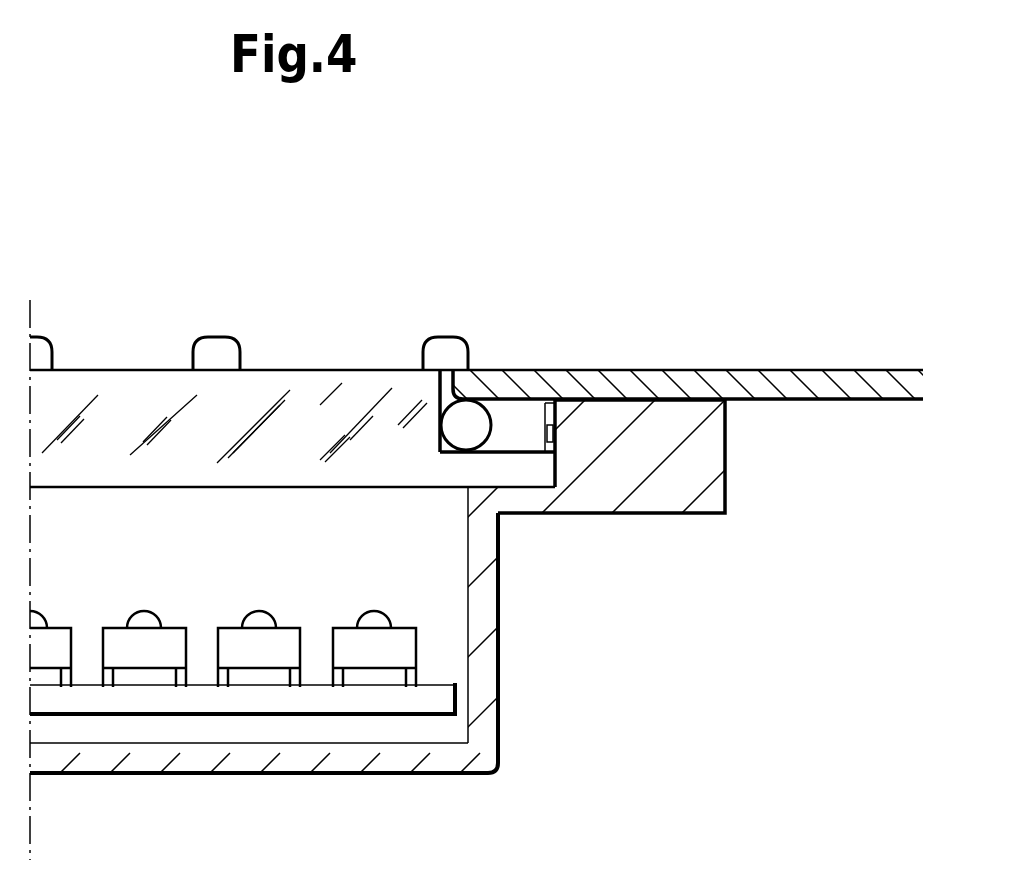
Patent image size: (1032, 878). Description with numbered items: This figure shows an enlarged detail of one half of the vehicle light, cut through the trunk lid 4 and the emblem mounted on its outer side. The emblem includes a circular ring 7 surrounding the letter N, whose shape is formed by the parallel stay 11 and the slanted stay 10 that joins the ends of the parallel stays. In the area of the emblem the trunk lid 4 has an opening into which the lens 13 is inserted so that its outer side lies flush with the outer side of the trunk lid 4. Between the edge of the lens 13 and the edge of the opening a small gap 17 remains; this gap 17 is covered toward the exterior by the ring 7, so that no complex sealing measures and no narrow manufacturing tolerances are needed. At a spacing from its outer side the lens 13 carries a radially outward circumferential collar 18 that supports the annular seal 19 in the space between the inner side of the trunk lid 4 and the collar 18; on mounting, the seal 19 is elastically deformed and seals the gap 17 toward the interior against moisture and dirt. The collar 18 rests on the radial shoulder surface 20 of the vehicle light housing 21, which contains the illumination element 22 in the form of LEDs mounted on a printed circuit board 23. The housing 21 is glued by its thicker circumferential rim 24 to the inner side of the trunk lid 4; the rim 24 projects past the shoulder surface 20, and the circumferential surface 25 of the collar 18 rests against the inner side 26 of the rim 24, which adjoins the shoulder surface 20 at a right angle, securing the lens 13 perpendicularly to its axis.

The trunk lid 4 is at (787, 385).
The circular ring 7 is at (440, 355).
The slanted stay 10 is at (42, 357).
The parallel stay 11 is at (210, 347).
The lens 13 is at (330, 390).
The gap 17 is at (443, 387).
The circumferential collar 18 is at (560, 472).
The annular seal 19 is at (548, 467).
The radial shoulder surface 20 is at (480, 448).
The vehicle light housing 21 is at (494, 705).
The illumination element 22 is at (355, 655).
The printed circuit board 23 is at (365, 703).
The circumferential rim 24 is at (693, 448).
The circumferential surface 25 is at (546, 440).
The inner side 26 is at (560, 437).